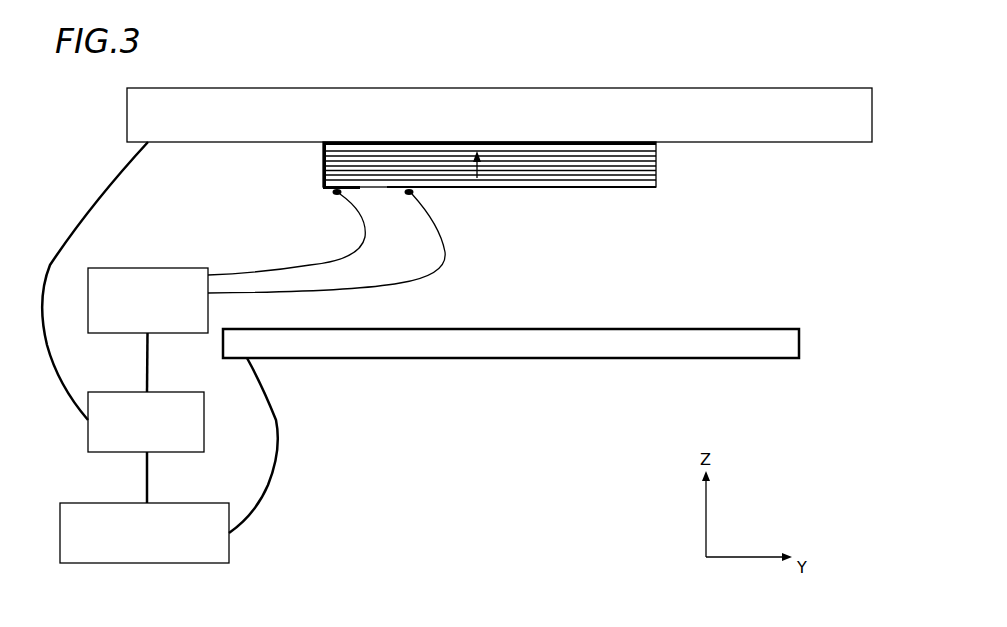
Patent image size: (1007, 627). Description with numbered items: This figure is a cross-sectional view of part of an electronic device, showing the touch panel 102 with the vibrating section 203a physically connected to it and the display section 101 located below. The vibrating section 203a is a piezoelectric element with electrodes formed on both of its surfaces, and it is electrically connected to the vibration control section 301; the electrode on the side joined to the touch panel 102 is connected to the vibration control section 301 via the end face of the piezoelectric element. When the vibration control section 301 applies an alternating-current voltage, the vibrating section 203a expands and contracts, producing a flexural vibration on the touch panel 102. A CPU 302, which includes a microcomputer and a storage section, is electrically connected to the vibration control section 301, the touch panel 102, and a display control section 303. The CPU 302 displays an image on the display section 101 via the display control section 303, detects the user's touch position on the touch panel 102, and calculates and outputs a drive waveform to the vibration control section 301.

The touch panel 102 is at (582, 98).
The vibrating section 203a is at (572, 170).
The display section 101 is at (712, 333).
The vibration control section 301 is at (162, 267).
The CPU 302 is at (156, 393).
The display control section 303 is at (184, 501).